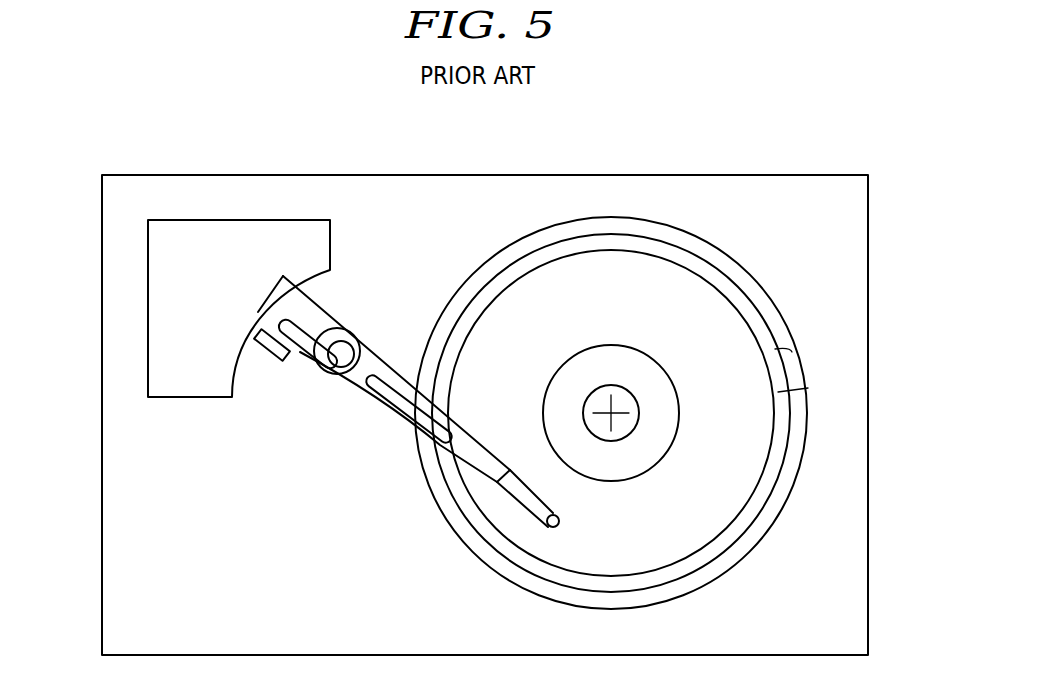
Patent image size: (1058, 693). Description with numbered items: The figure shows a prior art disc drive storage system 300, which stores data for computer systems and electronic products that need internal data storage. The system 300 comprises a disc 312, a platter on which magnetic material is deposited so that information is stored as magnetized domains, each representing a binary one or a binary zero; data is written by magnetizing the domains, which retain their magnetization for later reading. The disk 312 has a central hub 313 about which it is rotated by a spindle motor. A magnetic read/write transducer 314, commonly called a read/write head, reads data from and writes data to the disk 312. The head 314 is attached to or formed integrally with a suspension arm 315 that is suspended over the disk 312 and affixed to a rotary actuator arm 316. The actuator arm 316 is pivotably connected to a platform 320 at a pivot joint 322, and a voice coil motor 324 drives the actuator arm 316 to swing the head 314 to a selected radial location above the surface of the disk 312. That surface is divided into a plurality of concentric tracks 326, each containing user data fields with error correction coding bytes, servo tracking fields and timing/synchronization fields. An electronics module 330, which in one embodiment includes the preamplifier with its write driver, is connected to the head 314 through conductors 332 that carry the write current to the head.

The disc drive storage system 300 is at (153, 152).
The disc 312 is at (686, 293).
The hub 313 is at (668, 422).
The magnetic read/write transducer 314 is at (546, 532).
The suspension arm 315 is at (515, 503).
The rotary actuator arm 316 is at (355, 387).
The platform 320 is at (125, 555).
The pivot joint 322 is at (348, 352).
The voice coil motor 324 is at (185, 390).
The concentric tracks 326 is at (777, 392).
The electronics module 330 is at (268, 358).
The conductors 332 is at (268, 322).